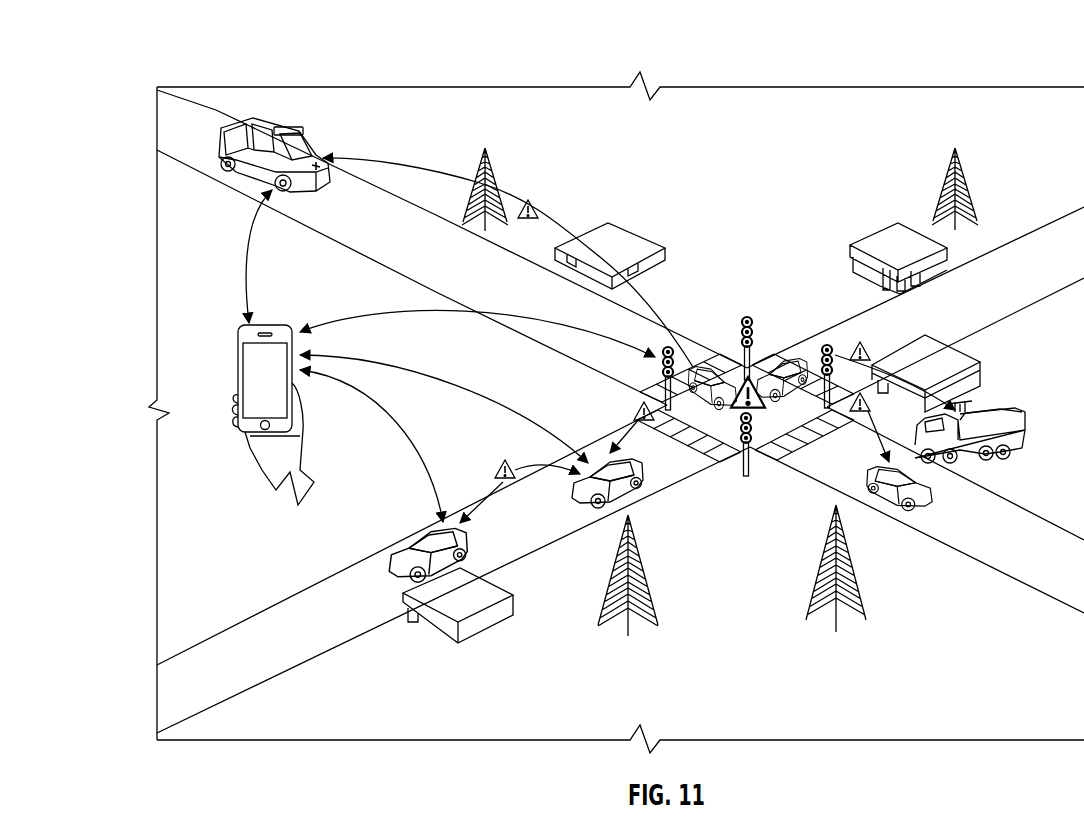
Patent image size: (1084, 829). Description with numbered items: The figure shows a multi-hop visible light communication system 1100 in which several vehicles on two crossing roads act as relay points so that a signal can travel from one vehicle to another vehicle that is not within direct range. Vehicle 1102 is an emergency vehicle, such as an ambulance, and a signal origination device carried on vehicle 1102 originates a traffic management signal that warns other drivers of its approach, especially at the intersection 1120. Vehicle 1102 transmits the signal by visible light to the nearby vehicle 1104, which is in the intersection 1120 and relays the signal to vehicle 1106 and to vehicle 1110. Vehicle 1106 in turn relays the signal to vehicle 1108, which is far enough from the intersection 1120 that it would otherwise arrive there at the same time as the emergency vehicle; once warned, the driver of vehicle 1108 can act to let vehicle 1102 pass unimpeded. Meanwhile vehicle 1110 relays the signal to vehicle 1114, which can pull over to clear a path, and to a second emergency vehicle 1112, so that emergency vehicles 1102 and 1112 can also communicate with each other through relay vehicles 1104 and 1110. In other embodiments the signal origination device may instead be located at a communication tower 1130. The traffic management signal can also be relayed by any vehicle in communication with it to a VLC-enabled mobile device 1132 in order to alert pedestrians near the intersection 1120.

The multi-hop visible light communication system 1100 is at (128, 50).
The vehicle 1102 is at (275, 118).
The vehicle 1104 is at (712, 372).
The vehicle 1106 is at (605, 500).
The vehicle 1108 is at (418, 532).
The vehicle 1110 is at (790, 362).
The emergency vehicle 1112 is at (990, 412).
The vehicle 1114 is at (887, 506).
The intersection 1120 is at (629, 404).
The communication tower 1130 is at (498, 195).
The mobile device 1132 is at (240, 366).